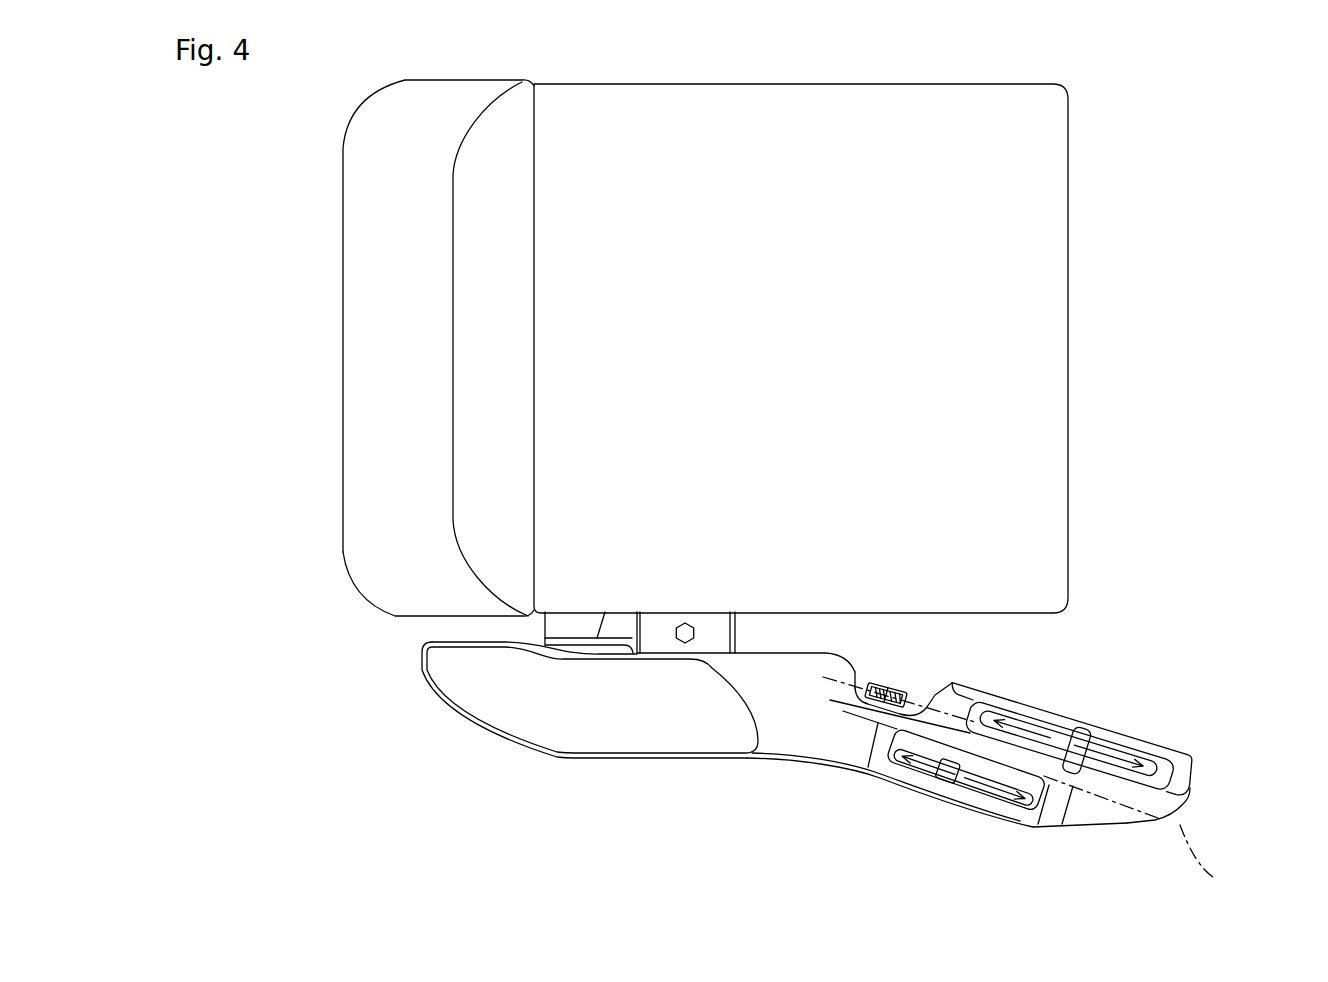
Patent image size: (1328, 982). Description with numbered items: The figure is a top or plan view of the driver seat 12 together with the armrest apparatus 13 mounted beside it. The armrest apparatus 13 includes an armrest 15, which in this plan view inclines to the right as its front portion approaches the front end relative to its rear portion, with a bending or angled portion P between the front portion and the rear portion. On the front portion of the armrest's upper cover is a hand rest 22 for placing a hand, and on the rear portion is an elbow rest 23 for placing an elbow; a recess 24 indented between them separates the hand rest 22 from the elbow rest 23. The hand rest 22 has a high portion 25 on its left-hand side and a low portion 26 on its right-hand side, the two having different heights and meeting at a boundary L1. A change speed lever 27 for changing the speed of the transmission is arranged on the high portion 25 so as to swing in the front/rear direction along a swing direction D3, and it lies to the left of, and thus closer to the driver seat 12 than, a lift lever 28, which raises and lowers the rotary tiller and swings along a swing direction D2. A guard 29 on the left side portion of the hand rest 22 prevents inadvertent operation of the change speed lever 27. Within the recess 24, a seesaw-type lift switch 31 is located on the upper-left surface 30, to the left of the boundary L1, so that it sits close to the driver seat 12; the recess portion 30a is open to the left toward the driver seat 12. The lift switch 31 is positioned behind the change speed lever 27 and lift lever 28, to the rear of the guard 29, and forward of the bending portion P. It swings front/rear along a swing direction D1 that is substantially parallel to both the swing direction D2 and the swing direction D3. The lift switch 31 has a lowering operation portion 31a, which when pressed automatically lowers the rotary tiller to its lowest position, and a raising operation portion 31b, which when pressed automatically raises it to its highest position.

The driver seat 12 is at (1047, 332).
The armrest apparatus 13 is at (1197, 800).
The armrest 15 is at (1053, 832).
The hand rest 22 is at (1110, 838).
The elbow rest 23 is at (628, 737).
The recess 24 is at (915, 673).
The high portion 25 is at (1013, 702).
The low portion 26 is at (973, 802).
The change speed lever 27 is at (1087, 727).
The lift lever 28 is at (942, 780).
The guard 29 is at (1170, 746).
The upper-left surface 30 is at (938, 692).
The recess portion 30a is at (880, 688).
The lift switch 31 is at (951, 586).
The lowering operation portion 31a is at (898, 687).
The raising operation portion 31b is at (880, 685).
The bending portion P is at (825, 655).
The swing direction of the lift switch D1 is at (833, 677).
The swing direction of the lift lever D2 is at (993, 788).
The swing direction of the change speed lever D3 is at (1047, 730).
The boundary L1 is at (1215, 860).